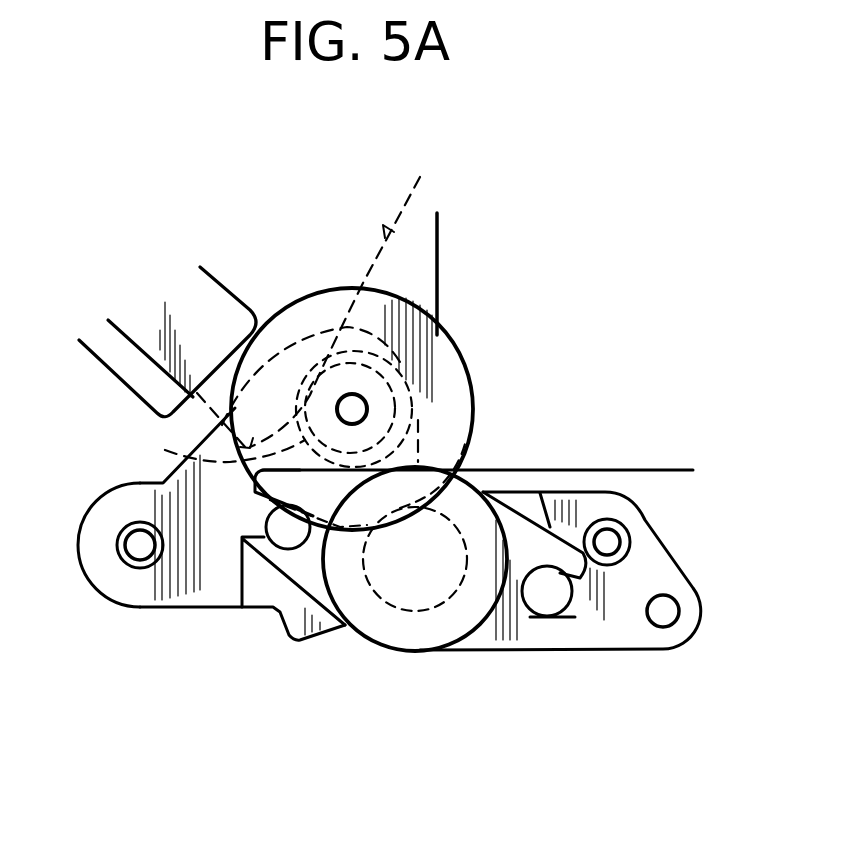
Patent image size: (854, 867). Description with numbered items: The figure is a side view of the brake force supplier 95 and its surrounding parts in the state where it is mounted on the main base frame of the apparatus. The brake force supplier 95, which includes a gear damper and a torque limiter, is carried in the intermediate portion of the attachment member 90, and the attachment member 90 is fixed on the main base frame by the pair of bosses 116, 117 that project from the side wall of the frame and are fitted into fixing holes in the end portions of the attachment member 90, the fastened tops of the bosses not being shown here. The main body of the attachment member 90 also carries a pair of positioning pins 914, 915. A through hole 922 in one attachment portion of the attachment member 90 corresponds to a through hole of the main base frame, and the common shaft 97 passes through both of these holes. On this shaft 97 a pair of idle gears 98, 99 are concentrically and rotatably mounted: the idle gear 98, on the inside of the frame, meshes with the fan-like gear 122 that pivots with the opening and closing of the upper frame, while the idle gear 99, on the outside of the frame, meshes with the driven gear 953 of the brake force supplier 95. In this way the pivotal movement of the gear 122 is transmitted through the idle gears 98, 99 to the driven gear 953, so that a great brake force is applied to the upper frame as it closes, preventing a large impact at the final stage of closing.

The attachment member 90 is at (232, 612).
The brake force supplier 95 is at (473, 637).
The shaft 97 is at (366, 408).
The idle gear 98 is at (372, 380).
The idle gear 99 is at (467, 417).
The boss 116 is at (138, 547).
The boss 117 is at (609, 542).
The fan-like gear 122 is at (352, 302).
The positioning pin 914 is at (267, 520).
The positioning pin 915 is at (562, 596).
The through hole 922 is at (262, 397).
The driven gear 953 is at (400, 607).